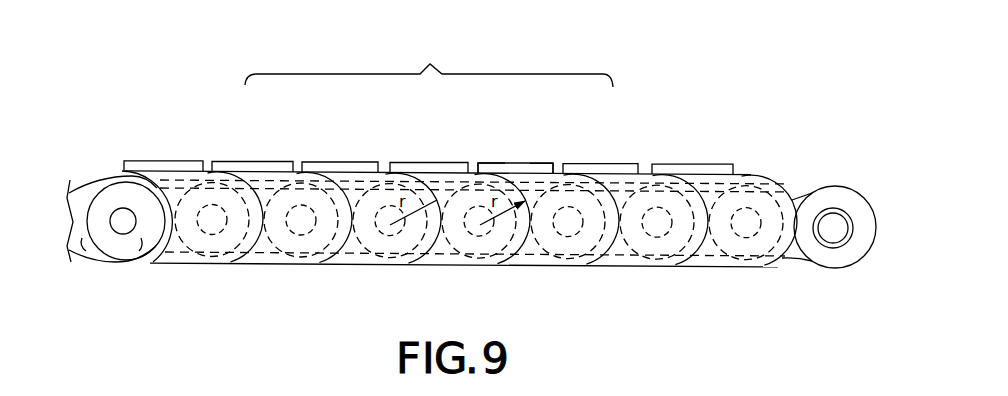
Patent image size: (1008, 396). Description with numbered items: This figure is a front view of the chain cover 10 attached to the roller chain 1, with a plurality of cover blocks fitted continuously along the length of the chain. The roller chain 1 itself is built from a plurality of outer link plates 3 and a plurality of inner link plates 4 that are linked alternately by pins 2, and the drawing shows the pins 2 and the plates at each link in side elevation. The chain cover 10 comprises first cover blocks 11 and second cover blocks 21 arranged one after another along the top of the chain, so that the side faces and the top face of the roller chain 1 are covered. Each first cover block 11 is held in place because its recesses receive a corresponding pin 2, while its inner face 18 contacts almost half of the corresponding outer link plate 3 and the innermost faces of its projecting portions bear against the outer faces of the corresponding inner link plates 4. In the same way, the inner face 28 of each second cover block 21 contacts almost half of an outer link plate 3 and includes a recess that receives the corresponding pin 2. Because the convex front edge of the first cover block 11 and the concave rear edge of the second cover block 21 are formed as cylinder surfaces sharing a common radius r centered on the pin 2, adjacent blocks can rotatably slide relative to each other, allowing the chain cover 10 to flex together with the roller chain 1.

The roller chain 1 is at (838, 172).
The pin 2 is at (386, 267).
The outer link plate 3 is at (141, 247).
The inner link plate 4 is at (84, 258).
The chain cover 10 is at (438, 102).
The first cover block 11 is at (345, 161).
The inner face 18 is at (540, 163).
The second cover block 21 is at (258, 161).
The inner face 28 is at (503, 163).